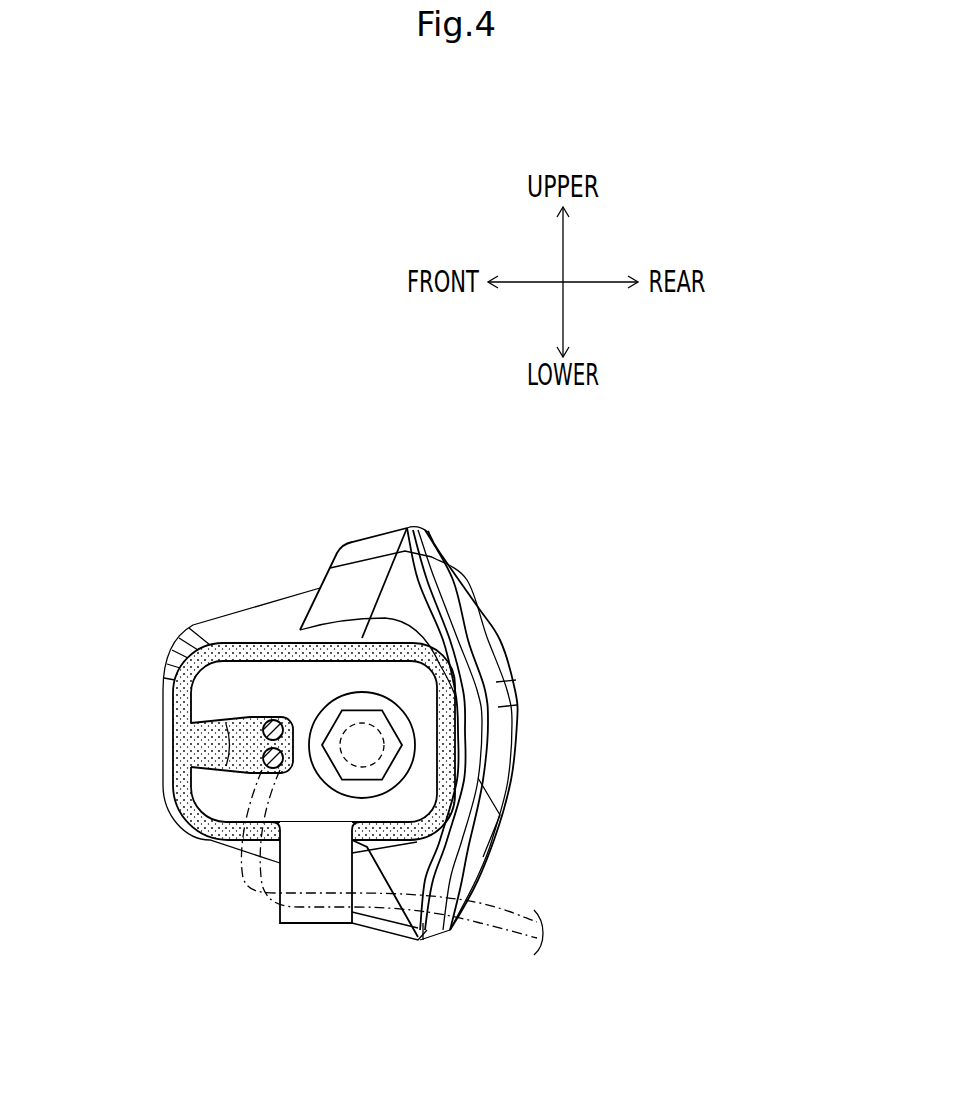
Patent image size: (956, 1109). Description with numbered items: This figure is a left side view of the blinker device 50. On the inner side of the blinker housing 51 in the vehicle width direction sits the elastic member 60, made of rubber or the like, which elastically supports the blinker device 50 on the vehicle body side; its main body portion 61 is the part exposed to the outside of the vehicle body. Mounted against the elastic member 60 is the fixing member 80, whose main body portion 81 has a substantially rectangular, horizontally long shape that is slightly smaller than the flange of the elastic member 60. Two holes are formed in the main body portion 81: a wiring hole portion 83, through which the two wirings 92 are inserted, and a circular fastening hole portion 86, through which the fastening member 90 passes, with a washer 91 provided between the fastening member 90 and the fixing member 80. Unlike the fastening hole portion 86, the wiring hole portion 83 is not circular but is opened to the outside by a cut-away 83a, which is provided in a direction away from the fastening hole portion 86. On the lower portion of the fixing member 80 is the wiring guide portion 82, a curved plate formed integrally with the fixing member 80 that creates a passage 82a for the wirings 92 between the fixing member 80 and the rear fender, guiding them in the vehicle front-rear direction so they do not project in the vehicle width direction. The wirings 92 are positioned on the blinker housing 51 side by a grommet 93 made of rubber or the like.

The blinker device 50 is at (269, 456).
The blinker housing 51 is at (357, 550).
The elastic member 60 is at (218, 641).
The main body portion 61 is at (177, 670).
The fixing member 80 is at (247, 686).
The main body portion 81 is at (275, 680).
The wiring guide portion 82 is at (304, 918).
The passage 82a is at (360, 878).
The wiring hole portion 83 is at (213, 750).
The cut-away 83a is at (204, 745).
The fastening hole portion 86 is at (468, 721).
The fastening member 90 is at (367, 753).
The washer 91 is at (403, 721).
The wirings 92 is at (283, 720).
The grommet 93 is at (190, 795).